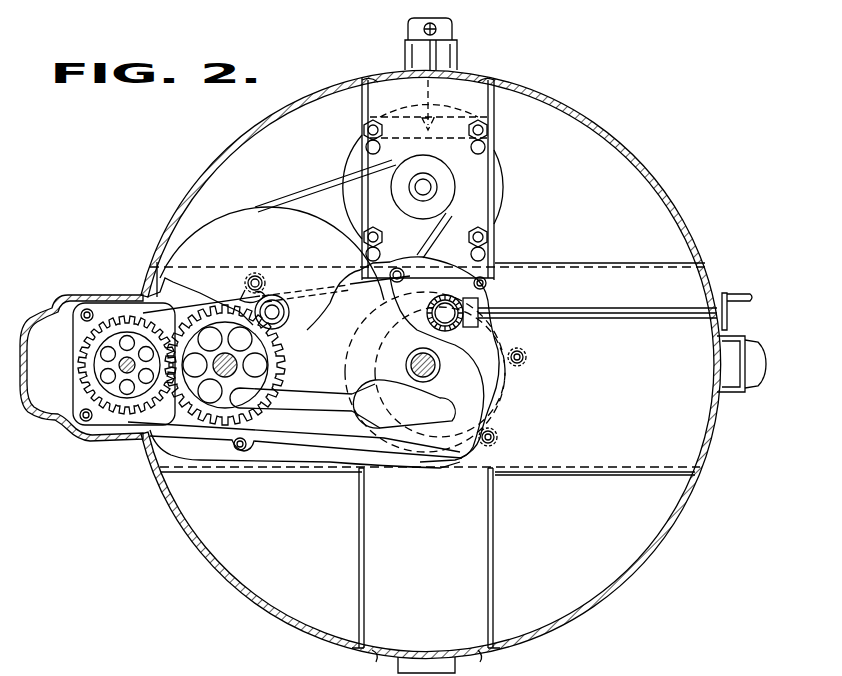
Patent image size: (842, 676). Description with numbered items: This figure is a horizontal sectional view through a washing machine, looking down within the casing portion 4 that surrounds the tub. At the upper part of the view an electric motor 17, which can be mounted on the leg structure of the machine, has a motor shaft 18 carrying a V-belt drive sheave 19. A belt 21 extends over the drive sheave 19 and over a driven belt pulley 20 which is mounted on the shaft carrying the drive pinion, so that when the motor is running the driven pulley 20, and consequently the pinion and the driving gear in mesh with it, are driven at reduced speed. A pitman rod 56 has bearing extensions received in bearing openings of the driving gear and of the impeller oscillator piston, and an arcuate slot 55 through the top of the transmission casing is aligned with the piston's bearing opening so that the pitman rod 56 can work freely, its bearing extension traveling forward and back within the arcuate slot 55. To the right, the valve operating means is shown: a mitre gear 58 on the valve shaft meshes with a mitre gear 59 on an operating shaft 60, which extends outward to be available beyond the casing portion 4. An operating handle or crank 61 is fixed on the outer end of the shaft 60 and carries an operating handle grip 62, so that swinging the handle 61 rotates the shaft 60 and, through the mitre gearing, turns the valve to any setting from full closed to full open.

The casing portion 4 is at (700, 247).
The electric motor 17 is at (500, 208).
The motor shaft 18 is at (428, 190).
The V-belt drive sheave 19 is at (451, 194).
The driven belt pulley 20 is at (230, 218).
The belt 21 is at (322, 185).
The arcuate slot 55 is at (487, 421).
The pitman rod 56 is at (340, 410).
The mitre gear 58 is at (455, 337).
The mitre gear 59 is at (483, 320).
The operating shaft 60 is at (605, 320).
The operating handle or crank 61 is at (730, 322).
The operating handle grip 62 is at (758, 286).